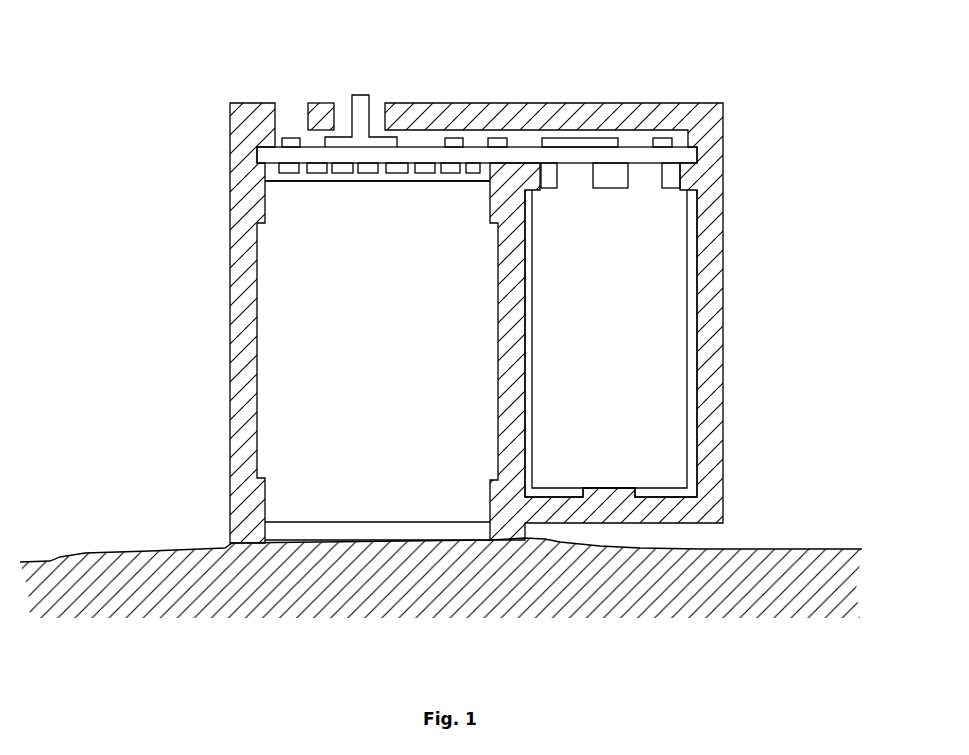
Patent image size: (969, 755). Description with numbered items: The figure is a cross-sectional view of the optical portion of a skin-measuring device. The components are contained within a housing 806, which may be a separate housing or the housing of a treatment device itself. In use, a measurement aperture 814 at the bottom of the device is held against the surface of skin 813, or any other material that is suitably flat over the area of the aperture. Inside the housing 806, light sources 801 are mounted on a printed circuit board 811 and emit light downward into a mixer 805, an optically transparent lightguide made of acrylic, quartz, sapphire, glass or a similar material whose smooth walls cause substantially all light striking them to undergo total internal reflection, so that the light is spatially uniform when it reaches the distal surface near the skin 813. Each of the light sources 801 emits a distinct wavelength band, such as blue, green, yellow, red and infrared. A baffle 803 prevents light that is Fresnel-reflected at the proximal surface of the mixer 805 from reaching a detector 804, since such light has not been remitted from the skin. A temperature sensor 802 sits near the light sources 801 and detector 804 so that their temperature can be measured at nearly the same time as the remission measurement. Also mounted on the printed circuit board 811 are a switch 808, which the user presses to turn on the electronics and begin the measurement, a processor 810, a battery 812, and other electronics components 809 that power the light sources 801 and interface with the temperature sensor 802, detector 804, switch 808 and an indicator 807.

The light sources 801 is at (300, 178).
The temperature sensor 802 is at (402, 178).
The baffle 803 is at (430, 178).
The detector 804 is at (457, 178).
The mixer 805 is at (288, 438).
The housing 806 is at (322, 103).
The indicator 807 is at (281, 135).
The switch 808 is at (362, 123).
The electronics components 809 is at (465, 133).
The processor 810 is at (593, 133).
The printed circuit board 811 is at (667, 158).
The battery 812 is at (643, 287).
The skin 813 is at (722, 572).
The measurement aperture 814 is at (370, 534).